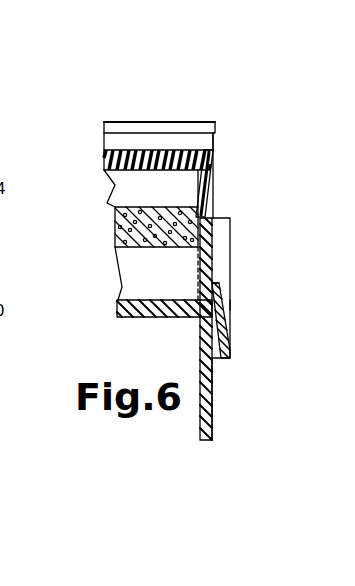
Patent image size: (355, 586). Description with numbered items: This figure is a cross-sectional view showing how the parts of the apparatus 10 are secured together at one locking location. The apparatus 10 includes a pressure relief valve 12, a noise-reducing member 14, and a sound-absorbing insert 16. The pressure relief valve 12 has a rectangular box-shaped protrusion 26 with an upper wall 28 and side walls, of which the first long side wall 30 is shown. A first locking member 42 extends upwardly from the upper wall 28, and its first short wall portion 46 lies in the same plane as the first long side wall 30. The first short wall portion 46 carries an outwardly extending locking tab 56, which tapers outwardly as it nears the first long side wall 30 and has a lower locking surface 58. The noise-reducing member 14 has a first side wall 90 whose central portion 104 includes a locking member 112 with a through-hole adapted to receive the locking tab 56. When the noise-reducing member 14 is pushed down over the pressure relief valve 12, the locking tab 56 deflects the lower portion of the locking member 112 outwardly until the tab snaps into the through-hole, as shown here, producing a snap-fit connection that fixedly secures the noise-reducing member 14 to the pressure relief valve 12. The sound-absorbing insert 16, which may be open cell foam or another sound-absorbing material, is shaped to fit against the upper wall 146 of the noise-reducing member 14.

The apparatus 10 is at (258, 98).
The pressure relief valve 12 is at (214, 398).
The noise-reducing member 14 is at (203, 120).
The sound-absorbing insert 16 is at (113, 225).
The protrusion 26 is at (213, 424).
The upper wall 28 is at (135, 317).
The first long side wall 30 is at (213, 377).
The first locking member 42 is at (215, 243).
The first short wall portion 46 is at (228, 217).
The locking tab 56 is at (228, 287).
The lower locking surface 58 is at (230, 305).
The first side wall 90 is at (215, 162).
The central portion 104 is at (215, 183).
The first locking member 112 is at (232, 335).
The upper wall 146 is at (128, 121).